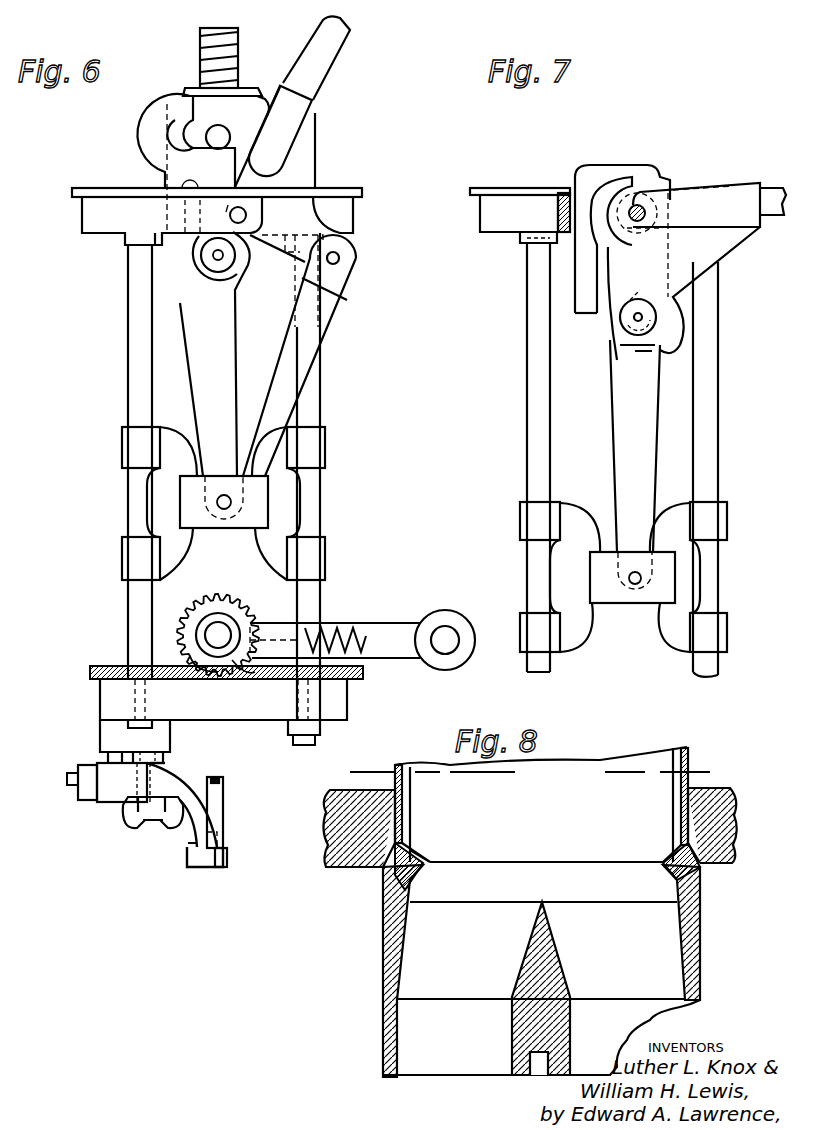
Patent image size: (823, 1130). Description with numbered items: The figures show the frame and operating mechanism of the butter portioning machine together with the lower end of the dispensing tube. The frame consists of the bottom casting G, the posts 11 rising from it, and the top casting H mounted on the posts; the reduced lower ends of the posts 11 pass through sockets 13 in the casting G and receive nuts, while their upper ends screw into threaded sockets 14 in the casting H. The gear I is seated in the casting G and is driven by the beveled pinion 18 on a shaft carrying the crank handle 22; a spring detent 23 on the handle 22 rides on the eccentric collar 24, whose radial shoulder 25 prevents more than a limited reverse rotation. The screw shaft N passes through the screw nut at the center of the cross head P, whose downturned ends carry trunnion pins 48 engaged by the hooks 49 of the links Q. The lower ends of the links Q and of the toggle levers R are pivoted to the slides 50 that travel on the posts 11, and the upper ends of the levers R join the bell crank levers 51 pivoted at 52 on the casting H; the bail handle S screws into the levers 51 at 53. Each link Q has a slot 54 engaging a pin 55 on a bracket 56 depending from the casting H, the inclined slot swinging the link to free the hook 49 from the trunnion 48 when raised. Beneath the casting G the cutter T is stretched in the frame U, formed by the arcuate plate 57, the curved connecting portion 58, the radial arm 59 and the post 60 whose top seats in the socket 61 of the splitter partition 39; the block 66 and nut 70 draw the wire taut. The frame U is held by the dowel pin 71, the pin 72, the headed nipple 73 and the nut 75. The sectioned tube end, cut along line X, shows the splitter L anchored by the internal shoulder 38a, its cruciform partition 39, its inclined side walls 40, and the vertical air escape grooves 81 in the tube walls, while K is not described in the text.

In FIG. 6, the screw shaft N is at (240, 52).
In FIG. 6, the cross head P is at (258, 96).
In FIG. 7, the cross head P is at (660, 178).
In FIG. 6, the bail handle S is at (336, 64).
In FIG. 7, the bail handle S is at (773, 218).
In FIG. 6, the top casting H is at (80, 216).
In FIG. 7, the top casting H is at (520, 210).
In FIG. 6, the link Q is at (215, 354).
In FIG. 7, the link Q is at (618, 303).
In FIG. 6, the toggle lever R is at (282, 338).
In FIG. 7, the toggle lever R is at (617, 403).
In FIG. 6, the gear I is at (100, 672).
In FIG. 6, the bottom casting G is at (223, 700).
In FIG. 6, the cutter T is at (185, 809).
In FIG. 6, the frame U is at (138, 815).
In FIG. 8, the section line X— X is at (529, 773).
In FIG. 8, the table / support K is at (326, 813).
In FIG. 8, the splitter L is at (541, 930).
In FIG. 6, the posts 11 is at (128, 360).
In FIG. 7, the posts 11 is at (527, 416).
In FIG. 6, the sockets 13 is at (320, 730).
In FIG. 7, the threaded sockets 14 is at (520, 244).
In FIG. 6, the beveled pinion 18 is at (203, 612).
In FIG. 6, the crank handle 22 is at (380, 622).
In FIG. 6, the spring detent 23 is at (266, 622).
In FIG. 6, the collar 24 is at (216, 612).
In FIG. 6, the radial shoulder 25 is at (243, 675).
In FIG. 8, the internal angular shoulder 38a is at (418, 863).
In FIG. 8, the cruciform partition 39 is at (557, 954).
In FIG. 8, the outwardly inclined side walls 40 is at (397, 967).
In FIG. 6, the trunnion pin 48 is at (224, 128).
In FIG. 6, the hook 49 is at (157, 112).
In FIG. 7, the hook 49 is at (615, 176).
In FIG. 6, the slide 50 is at (250, 546).
In FIG. 7, the slide 50 is at (654, 606).
In FIG. 6, the bell crank lever 51 is at (316, 169).
In FIG. 7, the bell crank lever 51 is at (713, 255).
In FIG. 6, the pivot 52 is at (248, 215).
In FIG. 7, the pivot 52 is at (641, 222).
In FIG. 6, the socket connection 53 is at (316, 116).
In FIG. 6, the slot 54 is at (205, 250).
In FIG. 6, the pin 55 is at (212, 263).
In FIG. 6, the bracket 56 is at (213, 259).
In FIG. 6, the arcuate plate 57 is at (123, 782).
In FIG. 6, the connecting portion 58 is at (192, 843).
In FIG. 6, the radial arm 59 is at (228, 857).
In FIG. 6, the post 60 is at (225, 812).
In FIG. 8, the socket 61 is at (535, 1076).
In FIG. 6, the block 66 is at (82, 775).
In FIG. 6, the nut 70 is at (80, 795).
In FIG. 6, the dowel pin 71 is at (97, 756).
In FIG. 6, the pin 72 is at (163, 762).
In FIG. 6, the headed nipple 73 is at (148, 746).
In FIG. 6, the nut 75 is at (138, 824).
In FIG. 8, the vertical grooves 81 is at (411, 822).